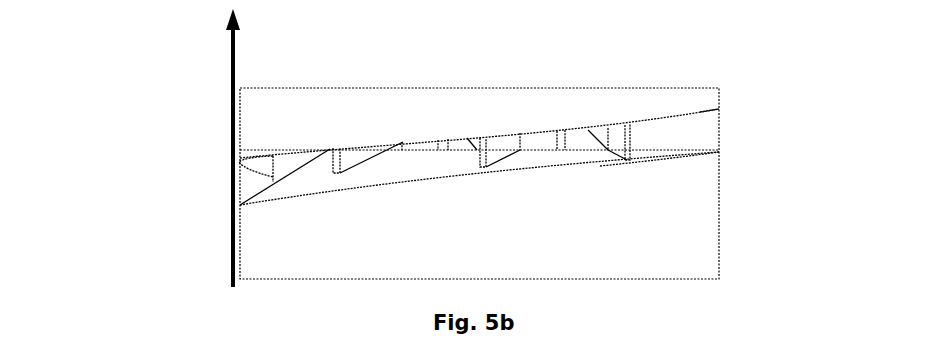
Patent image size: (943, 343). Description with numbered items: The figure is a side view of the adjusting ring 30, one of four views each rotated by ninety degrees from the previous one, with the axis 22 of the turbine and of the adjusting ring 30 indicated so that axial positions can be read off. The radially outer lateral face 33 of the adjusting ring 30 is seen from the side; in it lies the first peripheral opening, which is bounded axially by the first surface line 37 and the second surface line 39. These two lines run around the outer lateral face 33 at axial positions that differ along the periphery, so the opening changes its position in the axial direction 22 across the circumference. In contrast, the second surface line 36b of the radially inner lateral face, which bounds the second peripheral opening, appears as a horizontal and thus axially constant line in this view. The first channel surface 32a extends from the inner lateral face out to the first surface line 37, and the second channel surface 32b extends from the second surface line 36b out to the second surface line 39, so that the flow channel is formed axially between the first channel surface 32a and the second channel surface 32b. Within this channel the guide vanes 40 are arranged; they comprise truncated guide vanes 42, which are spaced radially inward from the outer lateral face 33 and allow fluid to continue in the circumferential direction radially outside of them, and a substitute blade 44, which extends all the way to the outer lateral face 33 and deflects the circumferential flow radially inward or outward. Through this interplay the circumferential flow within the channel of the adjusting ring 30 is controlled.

The adjusting ring 30 is at (174, 92).
The axis 22 is at (218, 143).
The first channel surface 32a is at (263, 162).
The second channel surface 32b is at (462, 167).
The radially outer lateral face 33 is at (430, 124).
The first surface line 37 is at (530, 132).
The second surface line 36b is at (585, 150).
The second surface line 39 is at (653, 162).
The guide vanes 40 is at (570, 108).
The truncated guide vanes 42 is at (363, 153).
The substitute blade 44 is at (712, 138).